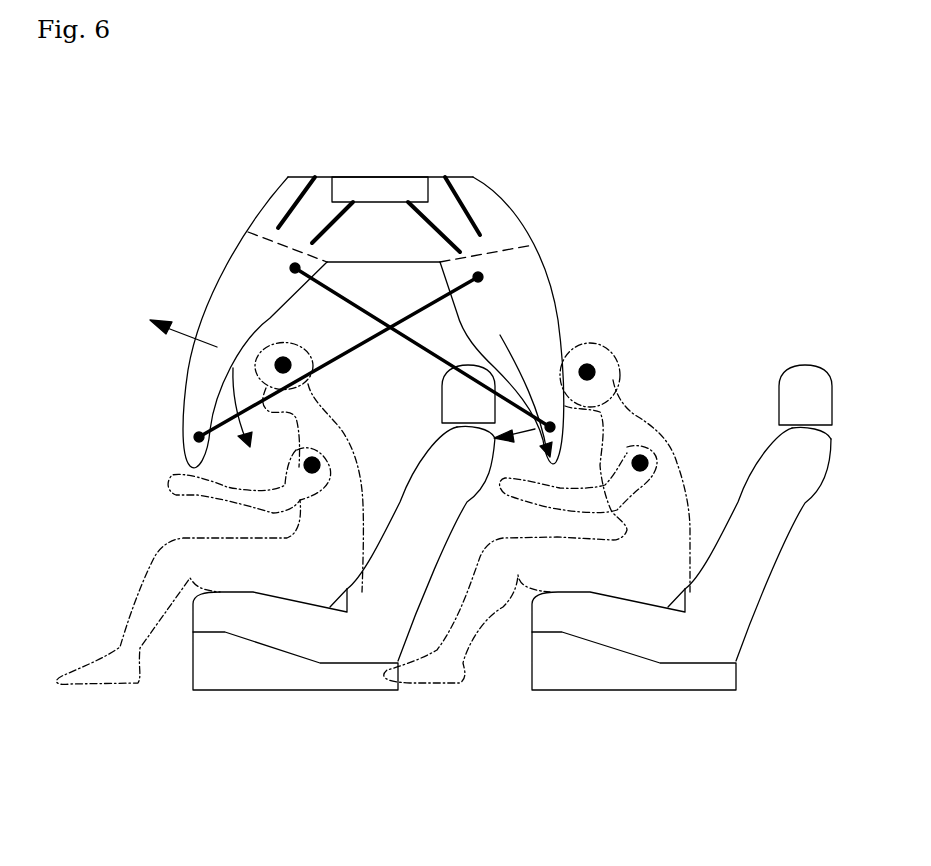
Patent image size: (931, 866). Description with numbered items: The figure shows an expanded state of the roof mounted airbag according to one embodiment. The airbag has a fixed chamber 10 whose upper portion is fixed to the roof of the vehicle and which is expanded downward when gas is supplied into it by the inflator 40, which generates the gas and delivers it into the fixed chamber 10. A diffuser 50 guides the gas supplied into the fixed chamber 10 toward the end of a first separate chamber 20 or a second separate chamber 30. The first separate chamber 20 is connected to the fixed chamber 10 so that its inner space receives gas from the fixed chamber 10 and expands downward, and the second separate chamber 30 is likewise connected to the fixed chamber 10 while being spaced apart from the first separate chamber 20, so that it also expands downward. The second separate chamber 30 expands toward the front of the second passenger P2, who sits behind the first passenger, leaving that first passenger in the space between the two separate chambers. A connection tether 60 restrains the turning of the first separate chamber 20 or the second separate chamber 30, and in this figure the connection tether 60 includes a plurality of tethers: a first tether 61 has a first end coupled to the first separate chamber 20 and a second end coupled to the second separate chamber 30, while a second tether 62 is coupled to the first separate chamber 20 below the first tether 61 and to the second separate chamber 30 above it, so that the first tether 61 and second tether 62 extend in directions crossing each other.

The fixed chamber 10 is at (490, 203).
The first separate chamber 20 is at (210, 310).
The second separate chamber 30 is at (552, 308).
The inflator 40 is at (400, 187).
The diffuser 50 is at (287, 208).
The connection tether 60 is at (561, 757).
The first tether 61 is at (435, 302).
The second tether 62 is at (373, 318).
The second passenger P2 is at (613, 353).